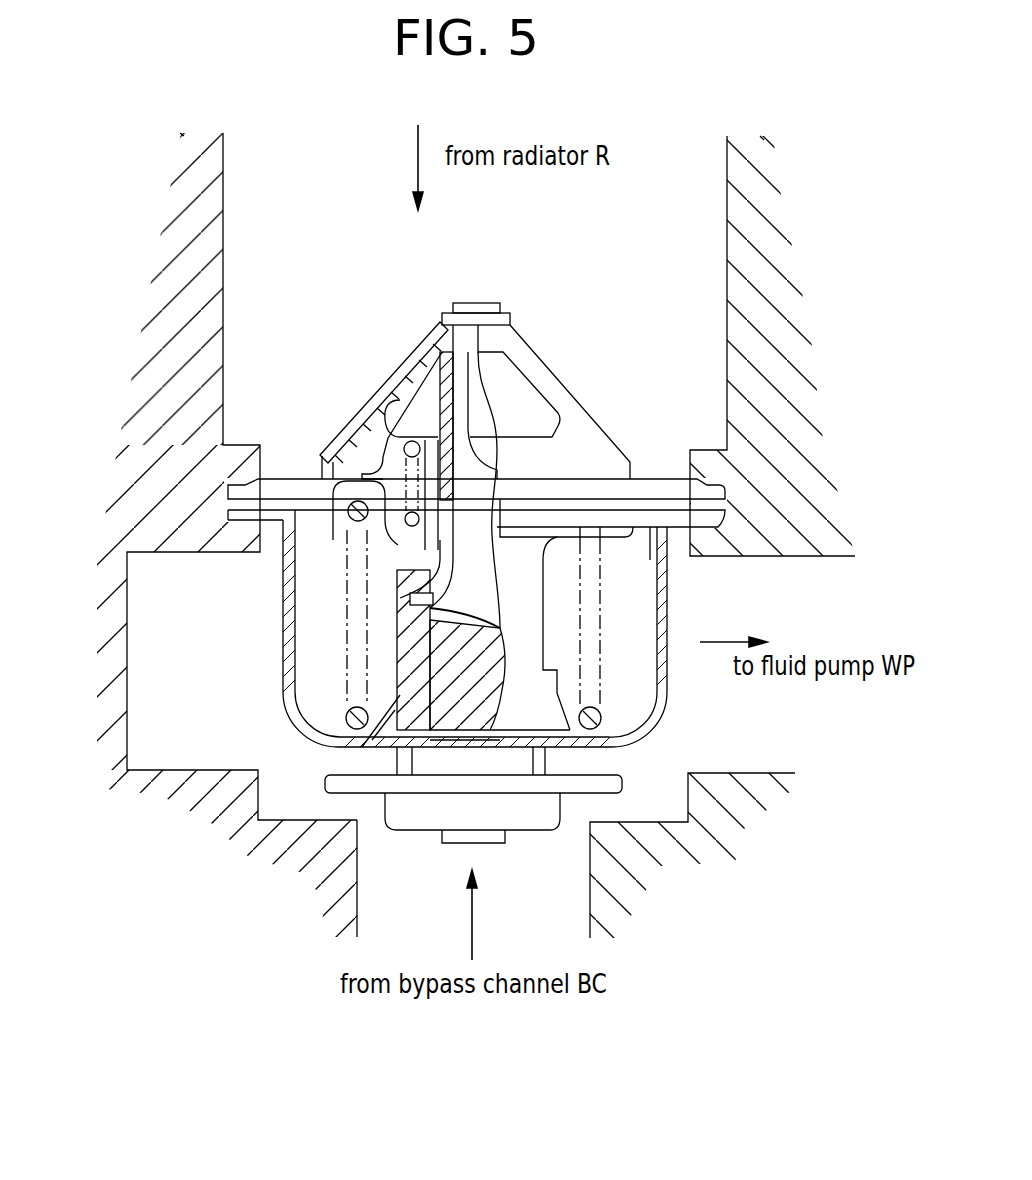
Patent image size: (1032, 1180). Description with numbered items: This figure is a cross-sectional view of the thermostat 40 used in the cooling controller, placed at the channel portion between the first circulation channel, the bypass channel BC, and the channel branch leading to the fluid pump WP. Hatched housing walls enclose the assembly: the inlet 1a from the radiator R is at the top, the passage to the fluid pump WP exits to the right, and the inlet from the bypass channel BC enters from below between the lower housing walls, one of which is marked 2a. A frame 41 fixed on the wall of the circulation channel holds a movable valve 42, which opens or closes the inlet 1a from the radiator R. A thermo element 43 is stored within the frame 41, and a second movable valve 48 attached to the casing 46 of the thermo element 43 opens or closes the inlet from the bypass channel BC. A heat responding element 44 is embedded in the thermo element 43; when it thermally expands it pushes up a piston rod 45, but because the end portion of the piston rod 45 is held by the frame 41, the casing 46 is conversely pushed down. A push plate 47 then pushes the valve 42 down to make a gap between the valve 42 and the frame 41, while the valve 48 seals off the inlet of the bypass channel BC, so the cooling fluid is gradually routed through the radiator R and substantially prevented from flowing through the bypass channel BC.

The inlet 1a is at (293, 318).
The second housing part 2a is at (730, 762).
The bypass channel BC is at (368, 860).
The thermostat 40 is at (547, 352).
The frame 41 is at (557, 390).
The movable valve 42 is at (392, 466).
The thermo element 43 is at (390, 623).
The heat responding element 44 is at (450, 665).
The piston rod 45 is at (455, 325).
The casing 46 is at (443, 400).
The push plate 47 is at (383, 457).
The movable valve 48 is at (415, 822).